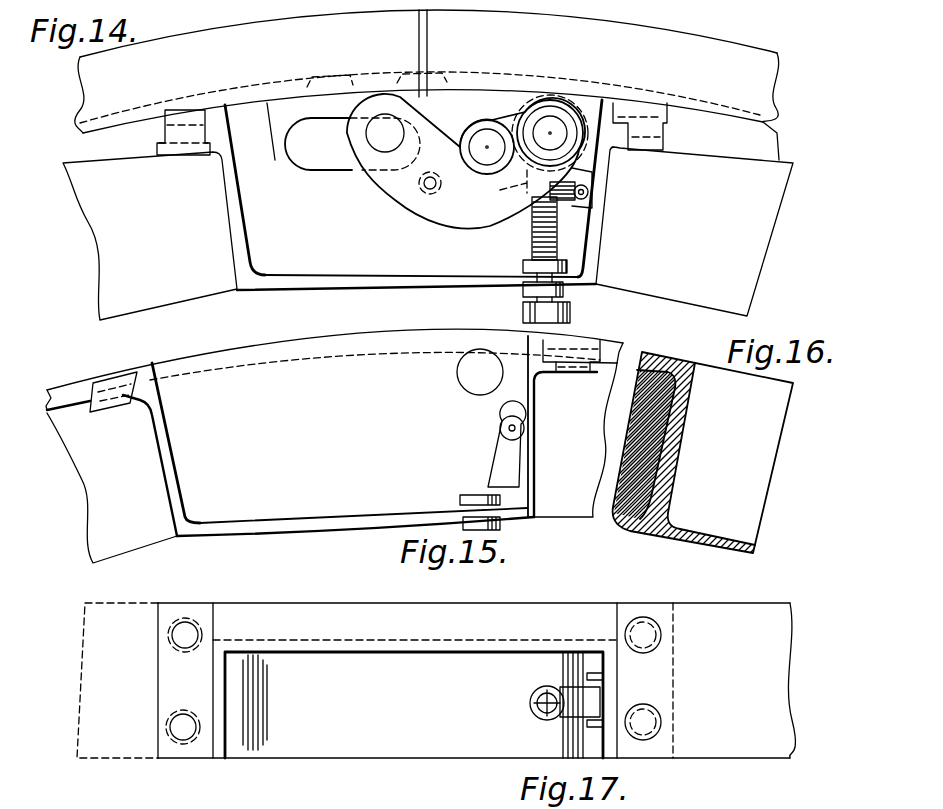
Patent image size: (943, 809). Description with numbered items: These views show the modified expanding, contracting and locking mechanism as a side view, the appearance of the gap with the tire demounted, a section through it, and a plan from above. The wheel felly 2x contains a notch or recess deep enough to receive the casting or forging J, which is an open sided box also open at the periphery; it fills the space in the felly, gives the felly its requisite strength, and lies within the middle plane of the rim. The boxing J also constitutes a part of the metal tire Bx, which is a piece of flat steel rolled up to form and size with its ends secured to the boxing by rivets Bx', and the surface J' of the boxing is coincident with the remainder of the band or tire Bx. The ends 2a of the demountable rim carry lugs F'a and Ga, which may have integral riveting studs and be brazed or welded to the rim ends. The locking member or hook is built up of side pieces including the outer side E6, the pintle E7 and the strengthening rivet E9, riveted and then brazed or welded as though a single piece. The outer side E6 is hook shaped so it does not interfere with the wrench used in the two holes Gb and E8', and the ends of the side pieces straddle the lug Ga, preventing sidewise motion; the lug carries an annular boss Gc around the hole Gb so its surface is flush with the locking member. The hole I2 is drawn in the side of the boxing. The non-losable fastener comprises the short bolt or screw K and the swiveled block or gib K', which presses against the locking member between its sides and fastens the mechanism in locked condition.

In FIG. 14, the rim end 2a is at (299, 47).
In FIG. 14, the metal tire Bx is at (122, 124).
In FIG. 15, the metal tire Bx is at (355, 352).
In FIG. 17, the metal tire Bx is at (436, 680).
In FIG. 15, the rivets Bx' is at (125, 365).
In FIG. 14, the wheel felly 2x is at (428, 211).
In FIG. 15, the wheel felly 2x is at (332, 451).
In FIG. 14, the boxing J is at (413, 212).
In FIG. 15, the boxing J is at (343, 436).
In FIG. 16, the boxing J is at (666, 450).
In FIG. 17, the boxing J is at (414, 705).
In FIG. 17, the surface of the boxing J' is at (415, 624).
In FIG. 14, the lug F'a is at (345, 165).
In FIG. 14, the outer side piece E6 is at (403, 180).
In FIG. 14, the pintle E7 is at (381, 140).
In FIG. 14, the hole E8' is at (586, 100).
In FIG. 14, the strengthening rivet E9 is at (427, 190).
In FIG. 14, the lug Ga is at (515, 103).
In FIG. 14, the hole Gb is at (488, 152).
In FIG. 14, the annular boss Gc is at (476, 123).
In FIG. 15, the opening I2 is at (460, 368).
In FIG. 14, the short bolt or screw K is at (580, 260).
In FIG. 17, the short bolt or screw K is at (543, 703).
In FIG. 14, the swiveled block or gib K' is at (571, 186).
In FIG. 15, the swiveled block or gib K' is at (479, 465).